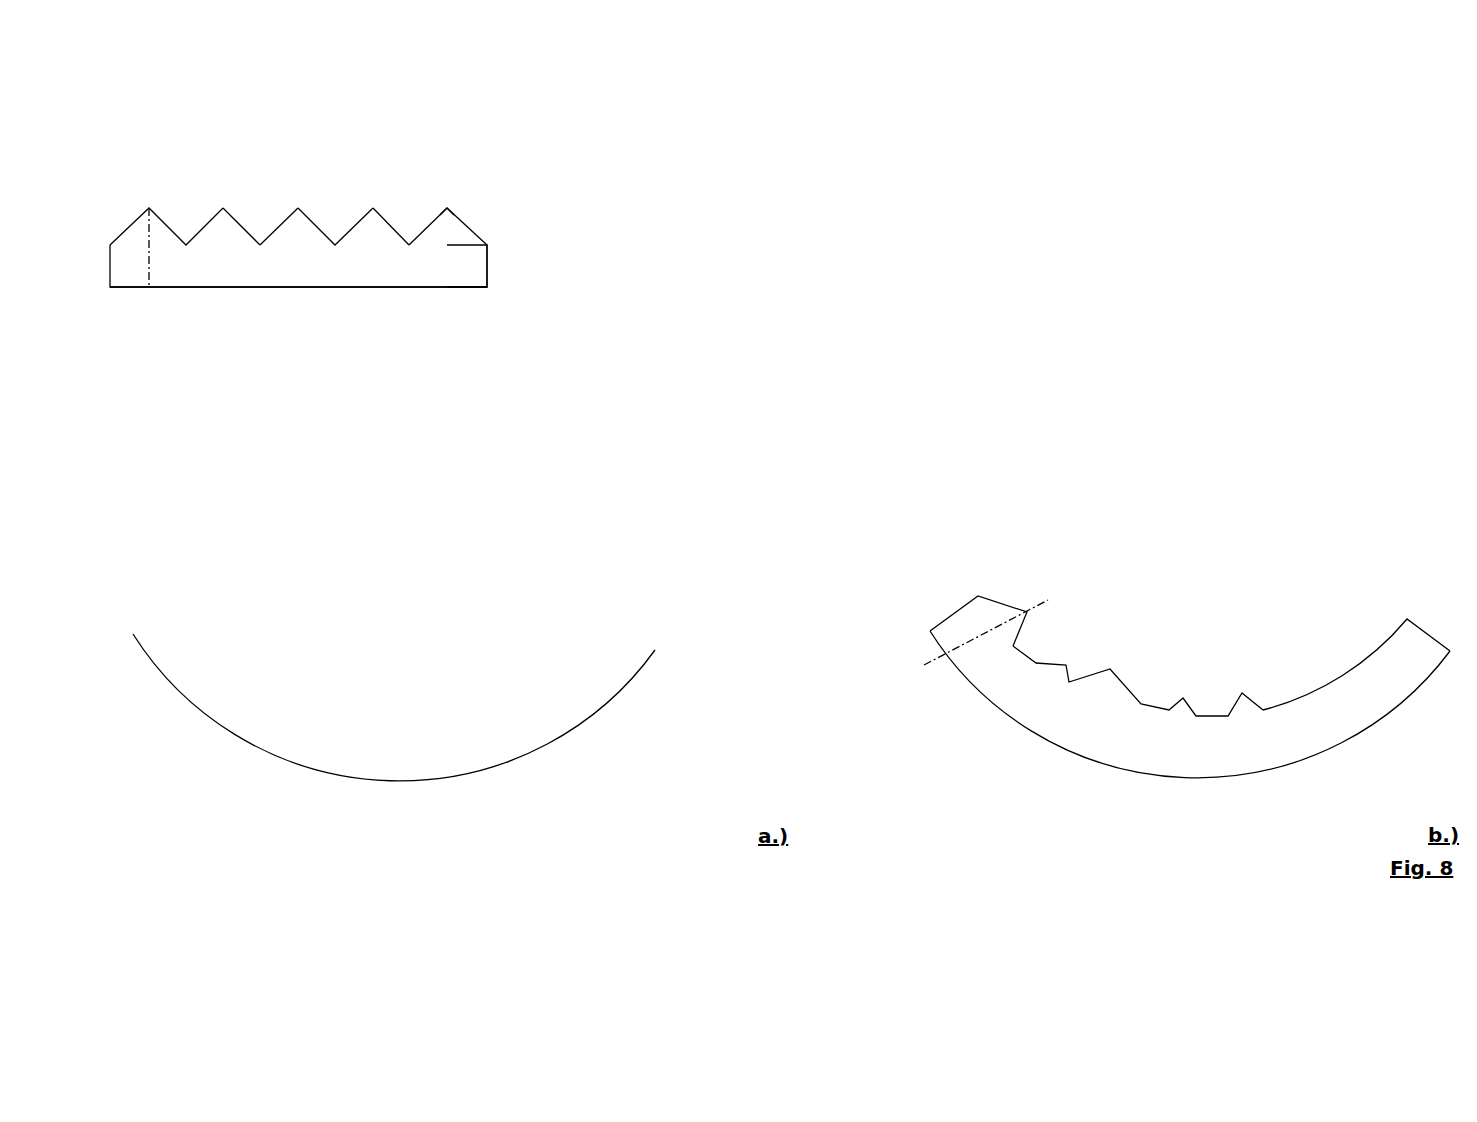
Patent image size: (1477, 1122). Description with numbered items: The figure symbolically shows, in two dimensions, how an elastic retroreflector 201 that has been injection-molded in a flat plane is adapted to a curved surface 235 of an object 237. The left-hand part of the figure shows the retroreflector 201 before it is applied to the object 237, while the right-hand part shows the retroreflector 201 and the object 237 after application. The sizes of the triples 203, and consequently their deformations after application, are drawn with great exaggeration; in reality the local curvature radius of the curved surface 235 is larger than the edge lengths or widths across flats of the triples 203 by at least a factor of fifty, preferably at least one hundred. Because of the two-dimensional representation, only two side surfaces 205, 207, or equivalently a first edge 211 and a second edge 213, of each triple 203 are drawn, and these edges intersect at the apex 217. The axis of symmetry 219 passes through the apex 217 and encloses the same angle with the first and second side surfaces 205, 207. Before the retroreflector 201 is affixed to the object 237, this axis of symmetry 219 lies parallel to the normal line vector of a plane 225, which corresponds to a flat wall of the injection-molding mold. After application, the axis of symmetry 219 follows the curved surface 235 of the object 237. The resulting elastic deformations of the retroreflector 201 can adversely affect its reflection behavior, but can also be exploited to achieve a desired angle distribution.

The elastic retroreflector 201 is at (227, 76).
The axis of symmetry 219 is at (150, 207).
The second side surface 207 is at (242, 223).
The first side surface 205 is at (280, 223).
The second edge 213 is at (395, 227).
The first edge 211 is at (430, 223).
The apex 217 is at (448, 209).
The triple 203 is at (453, 237).
The plane 225 is at (292, 287).
The object 237 is at (243, 543).
The curved surface 235 is at (244, 755).